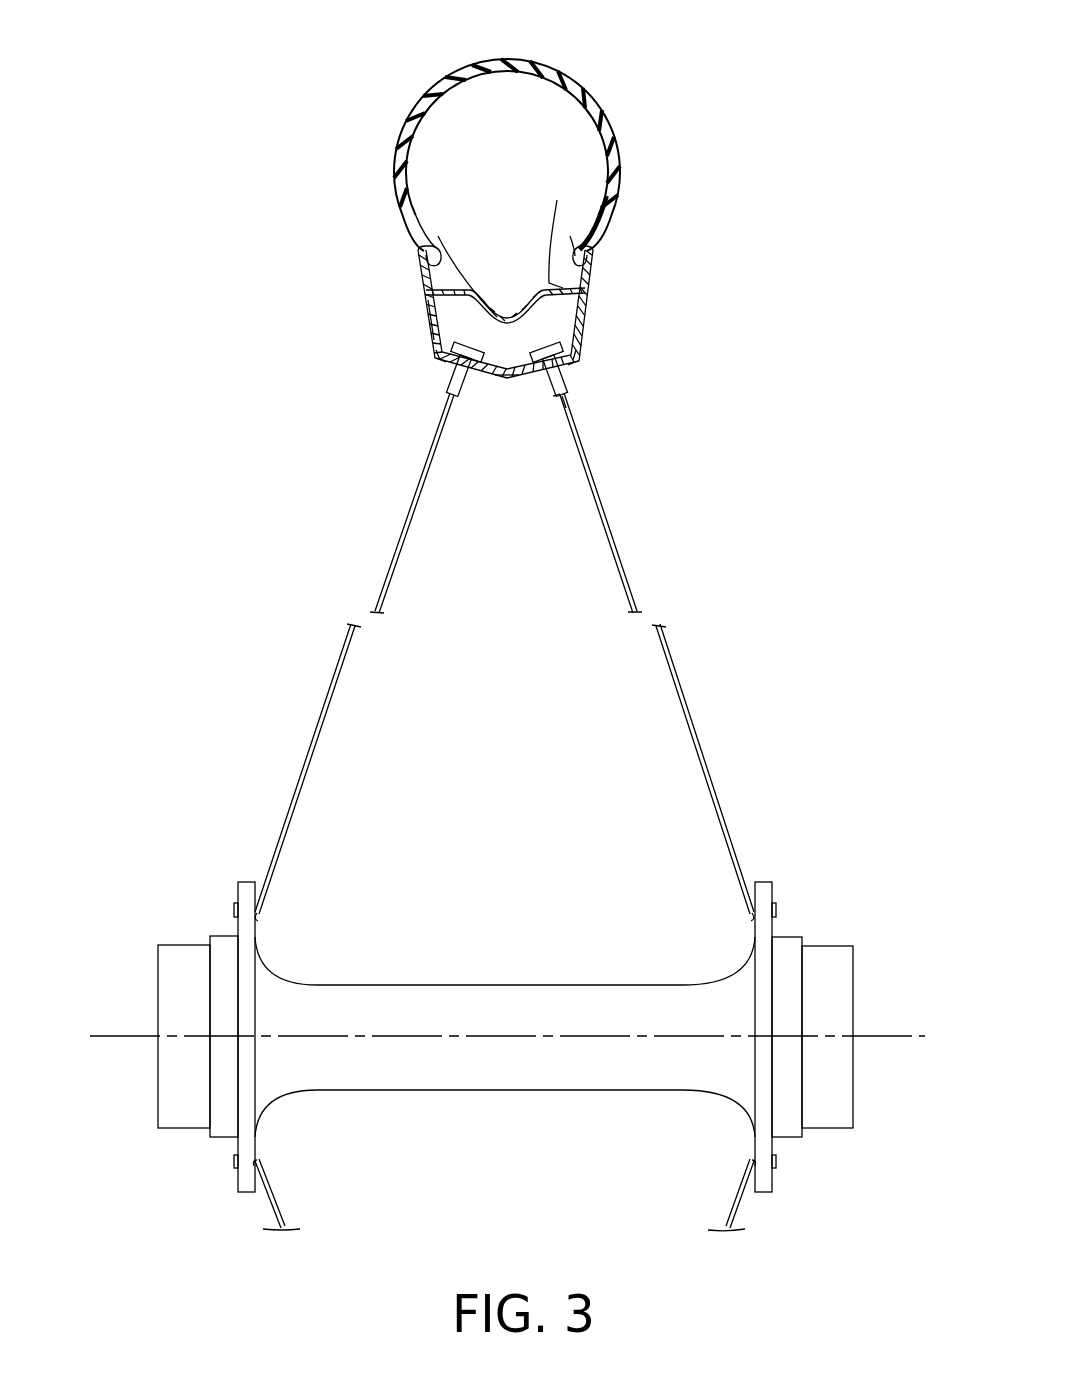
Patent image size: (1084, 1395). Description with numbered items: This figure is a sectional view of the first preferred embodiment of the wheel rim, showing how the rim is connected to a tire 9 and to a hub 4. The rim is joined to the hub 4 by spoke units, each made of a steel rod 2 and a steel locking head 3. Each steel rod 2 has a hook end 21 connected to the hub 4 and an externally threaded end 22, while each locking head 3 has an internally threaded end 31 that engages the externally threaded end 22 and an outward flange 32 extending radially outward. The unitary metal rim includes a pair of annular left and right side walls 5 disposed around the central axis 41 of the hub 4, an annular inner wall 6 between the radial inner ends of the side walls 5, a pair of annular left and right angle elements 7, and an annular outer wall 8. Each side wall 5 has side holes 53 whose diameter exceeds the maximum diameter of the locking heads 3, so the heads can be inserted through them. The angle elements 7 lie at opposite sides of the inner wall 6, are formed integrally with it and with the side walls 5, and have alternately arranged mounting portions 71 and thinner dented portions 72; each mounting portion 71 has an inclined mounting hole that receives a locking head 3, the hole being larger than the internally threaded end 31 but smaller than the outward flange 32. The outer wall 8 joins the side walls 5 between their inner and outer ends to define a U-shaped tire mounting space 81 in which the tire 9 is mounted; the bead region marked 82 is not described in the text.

The steel rod 2 is at (323, 700).
The hook end 21 is at (775, 913).
The externally threaded end 22 is at (570, 420).
The steel locking head 3 is at (447, 380).
The internally threaded end 31 is at (553, 403).
The outward flange 32 is at (545, 346).
The hub 4 is at (541, 1090).
The central axis 41 is at (880, 1036).
The left and right side walls 5 is at (418, 291).
The side holes 53 is at (427, 318).
The inner wall 6 is at (503, 374).
The left and right angle elements 7 is at (420, 352).
The mounting portions 71 is at (565, 366).
The dented portions 72 is at (433, 363).
The outer wall 8 is at (605, 195).
The tire mounting space 81 is at (503, 288).
The tire bead 82 is at (416, 228).
The tire 9 is at (545, 62).